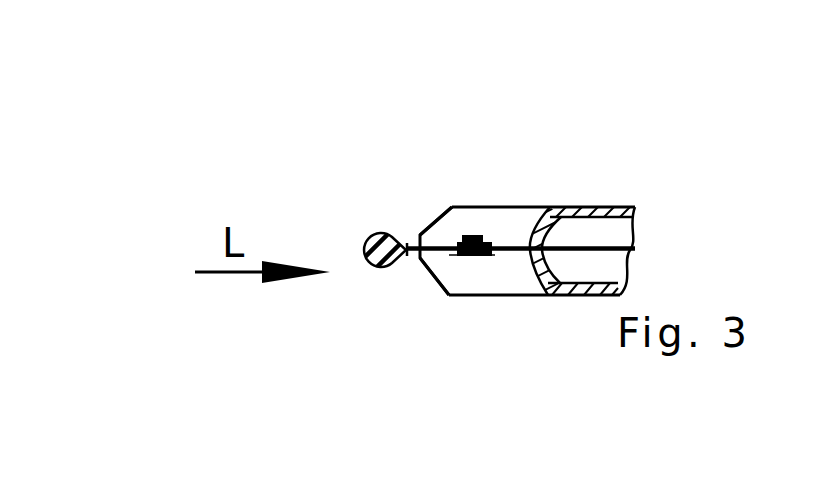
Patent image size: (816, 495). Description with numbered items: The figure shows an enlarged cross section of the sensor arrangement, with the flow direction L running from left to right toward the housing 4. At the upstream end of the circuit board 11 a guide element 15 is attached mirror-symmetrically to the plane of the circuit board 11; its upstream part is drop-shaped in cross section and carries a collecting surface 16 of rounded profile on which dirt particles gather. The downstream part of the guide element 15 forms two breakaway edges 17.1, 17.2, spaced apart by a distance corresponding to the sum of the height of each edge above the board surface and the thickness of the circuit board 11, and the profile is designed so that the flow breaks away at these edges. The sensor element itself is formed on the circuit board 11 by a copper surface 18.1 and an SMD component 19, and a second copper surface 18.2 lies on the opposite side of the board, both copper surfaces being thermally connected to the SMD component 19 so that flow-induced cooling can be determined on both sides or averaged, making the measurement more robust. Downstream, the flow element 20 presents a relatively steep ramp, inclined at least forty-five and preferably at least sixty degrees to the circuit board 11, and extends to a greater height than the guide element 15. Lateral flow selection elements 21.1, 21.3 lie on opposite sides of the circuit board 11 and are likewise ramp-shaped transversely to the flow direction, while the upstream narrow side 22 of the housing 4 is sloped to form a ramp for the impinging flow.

The housing 4 is at (619, 209).
The circuit board 11 is at (421, 262).
The guide element 15 is at (363, 230).
The collecting surface 16 is at (357, 247).
The breakaway edge 17.1 is at (400, 233).
The breakaway edge 17.2 is at (404, 260).
The copper surface 18.1 is at (491, 234).
The copper surface 18.2 is at (491, 260).
The SMD component 19 is at (474, 228).
The flow element 20 is at (546, 214).
The lateral flow selection element 21.1 is at (452, 232).
The lateral flow selection element 21.3 is at (457, 275).
The upstream narrow side 22 is at (432, 217).